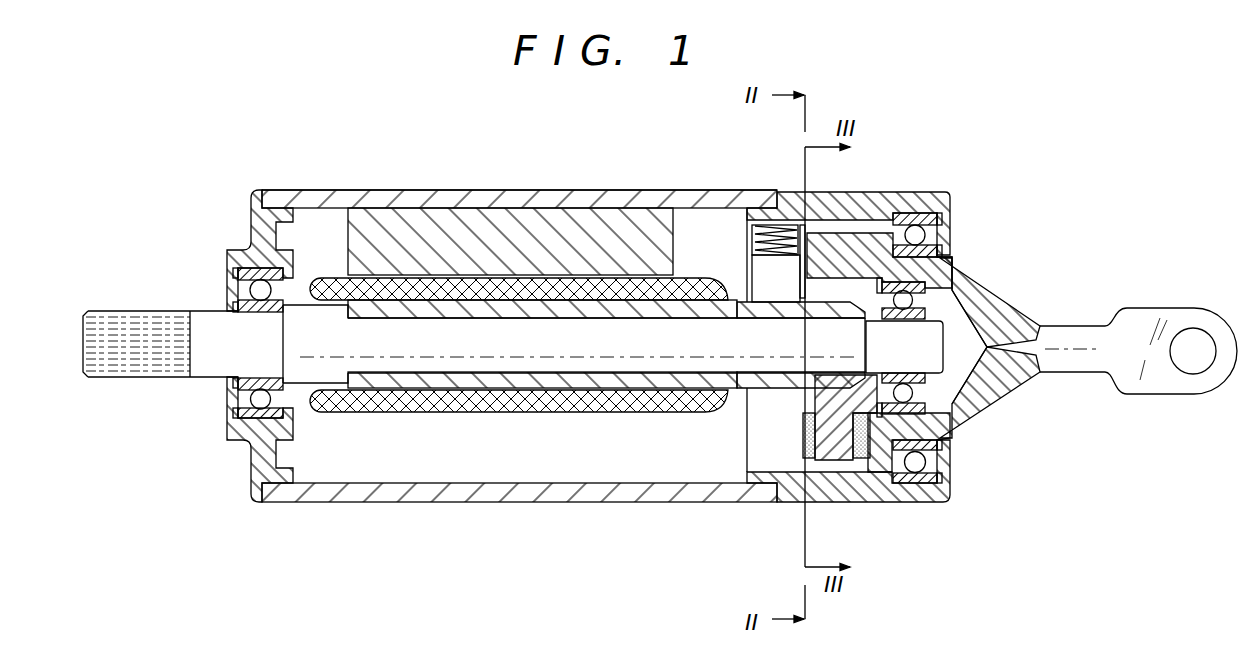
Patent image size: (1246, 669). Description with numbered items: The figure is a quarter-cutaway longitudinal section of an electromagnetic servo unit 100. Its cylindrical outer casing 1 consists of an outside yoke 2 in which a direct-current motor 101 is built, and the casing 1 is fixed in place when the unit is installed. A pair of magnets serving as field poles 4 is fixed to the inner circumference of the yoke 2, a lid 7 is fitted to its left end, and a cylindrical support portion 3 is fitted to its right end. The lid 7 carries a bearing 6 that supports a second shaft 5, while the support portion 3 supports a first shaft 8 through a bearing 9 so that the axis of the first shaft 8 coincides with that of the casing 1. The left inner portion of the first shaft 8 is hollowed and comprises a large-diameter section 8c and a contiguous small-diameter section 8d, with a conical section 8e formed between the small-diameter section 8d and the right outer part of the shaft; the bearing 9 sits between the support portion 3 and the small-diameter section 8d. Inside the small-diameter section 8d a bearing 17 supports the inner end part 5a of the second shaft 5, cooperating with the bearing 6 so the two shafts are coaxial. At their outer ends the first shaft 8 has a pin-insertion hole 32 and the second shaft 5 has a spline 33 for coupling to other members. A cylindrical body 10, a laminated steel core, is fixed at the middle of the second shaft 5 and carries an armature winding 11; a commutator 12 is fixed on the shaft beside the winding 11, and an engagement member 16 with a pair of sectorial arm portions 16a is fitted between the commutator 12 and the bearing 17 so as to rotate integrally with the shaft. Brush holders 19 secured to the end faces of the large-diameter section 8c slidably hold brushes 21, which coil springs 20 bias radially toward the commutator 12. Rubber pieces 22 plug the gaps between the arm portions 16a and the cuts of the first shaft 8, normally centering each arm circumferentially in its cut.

The outer casing 1 is at (390, 190).
The yoke 2 is at (541, 190).
The cylindrical support portion 3 is at (892, 192).
The field pole magnet 4 is at (580, 225).
The second shaft 5 is at (565, 364).
The inner end part 5a is at (968, 365).
The bearing 6 is at (243, 270).
The lid 7 is at (257, 216).
The first shaft 8 is at (1022, 332).
The large-diameter section 8c is at (846, 250).
The small-diameter section 8d is at (940, 428).
The conical section 8e is at (985, 300).
The bearing 9 is at (930, 192).
The cylindrical body 10 is at (405, 378).
The armature winding 11 is at (523, 410).
The commutator 12 is at (760, 392).
The engagement member 16 is at (800, 405).
The sectorial arm portion 16a is at (835, 450).
The bearing 17 is at (975, 262).
The brush holder 19 is at (770, 227).
The coil spring 20 is at (745, 240).
The brush 21 is at (755, 277).
The rubber piece 22 is at (862, 450).
The pin-insertion hole 32 is at (1196, 330).
The spline 33 is at (100, 372).
The electromagnetic servo unit 100 is at (486, 160).
The direct-current motor 101 is at (640, 460).